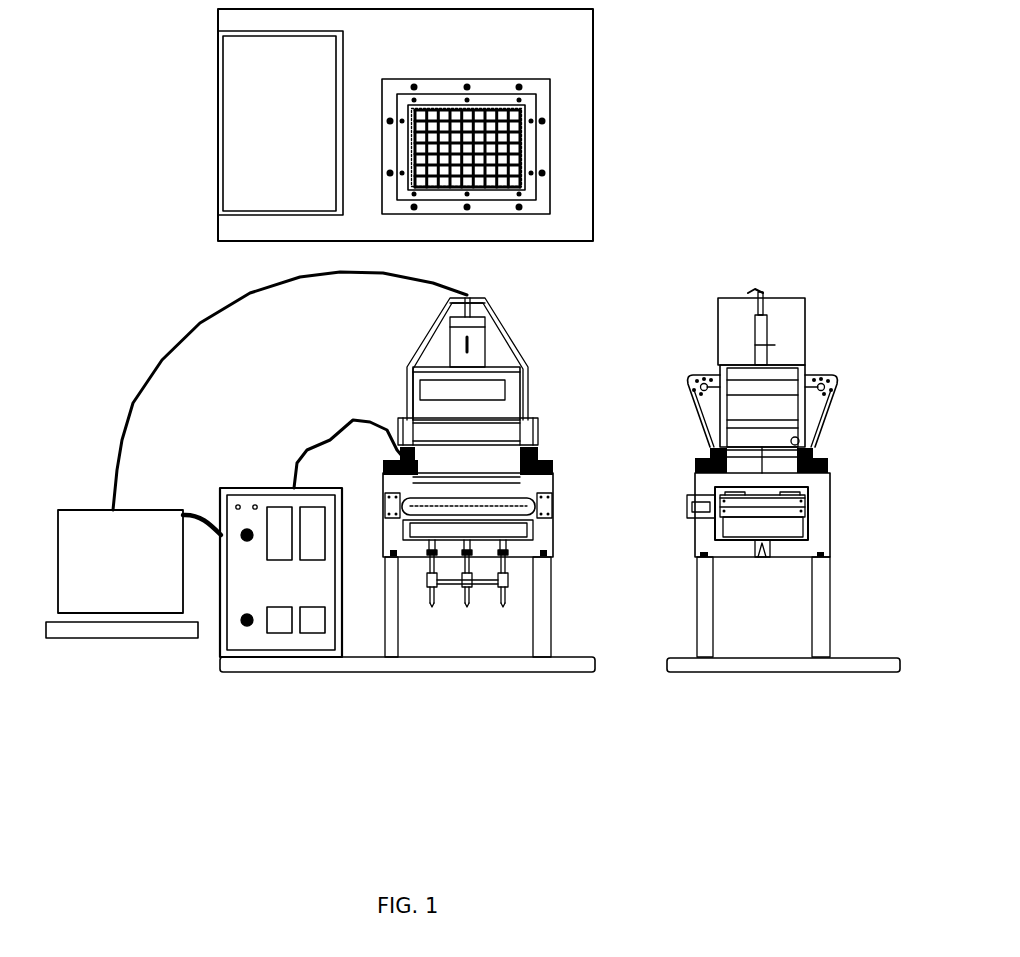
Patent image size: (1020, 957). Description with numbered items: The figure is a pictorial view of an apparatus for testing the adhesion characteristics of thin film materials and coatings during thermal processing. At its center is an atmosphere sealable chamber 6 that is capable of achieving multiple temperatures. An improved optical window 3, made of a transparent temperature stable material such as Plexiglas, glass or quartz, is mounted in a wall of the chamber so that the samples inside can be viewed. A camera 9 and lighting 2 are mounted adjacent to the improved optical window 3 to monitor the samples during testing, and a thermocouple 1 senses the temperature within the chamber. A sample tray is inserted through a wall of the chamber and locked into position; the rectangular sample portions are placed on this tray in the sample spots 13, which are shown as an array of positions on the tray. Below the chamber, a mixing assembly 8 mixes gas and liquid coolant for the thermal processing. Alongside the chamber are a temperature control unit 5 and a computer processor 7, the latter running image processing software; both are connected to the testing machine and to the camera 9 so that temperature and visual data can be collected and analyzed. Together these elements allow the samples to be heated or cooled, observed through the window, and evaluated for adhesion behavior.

The thermocouple 1 is at (446, 417).
The lighting 2 is at (782, 368).
The improved optical window 3 is at (497, 359).
The temperature control unit 5 is at (311, 538).
The atmosphere sealable chamber 6 is at (783, 572).
The computer processor 7 is at (126, 529).
The mixing assembly 8 is at (515, 582).
The camera 9 is at (513, 318).
The sample spots 13 is at (548, 159).